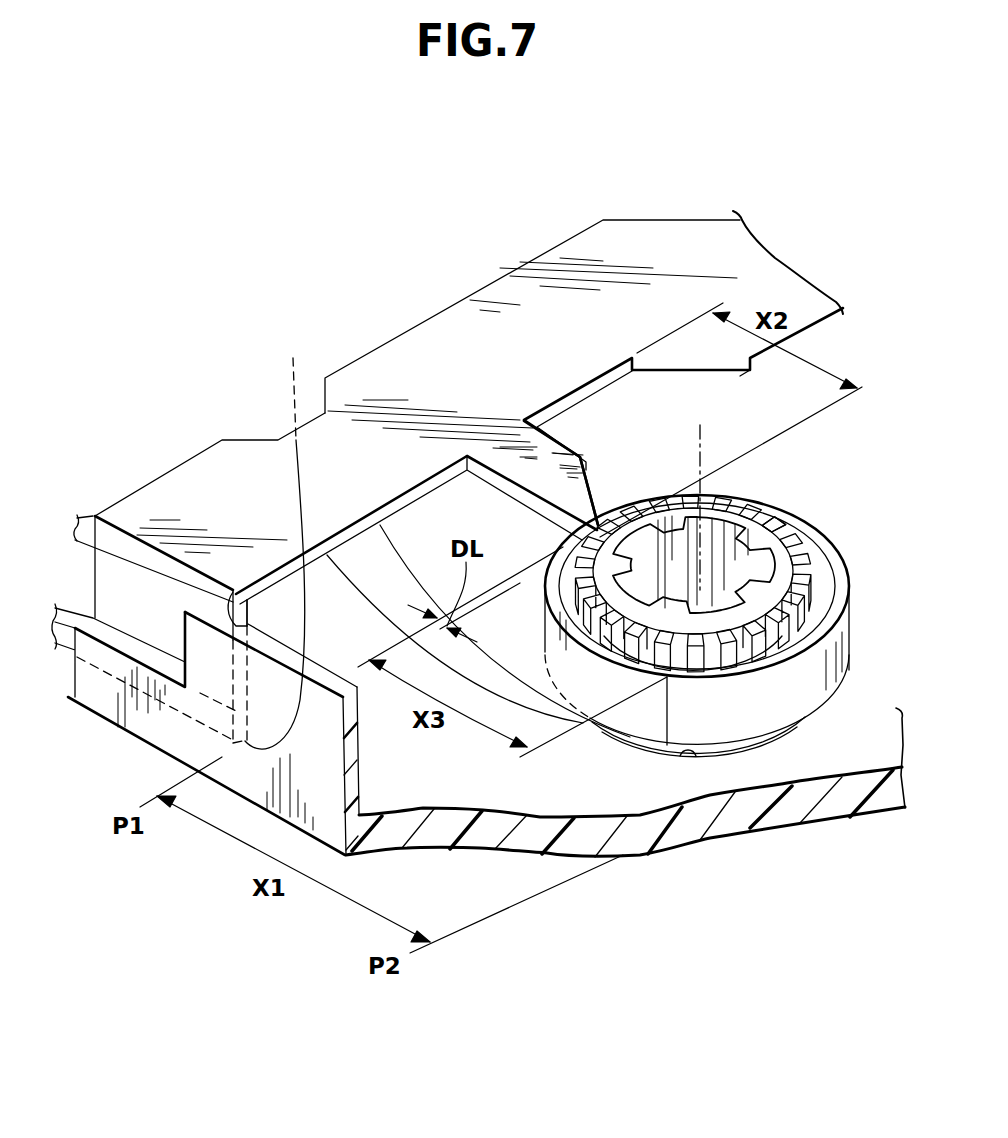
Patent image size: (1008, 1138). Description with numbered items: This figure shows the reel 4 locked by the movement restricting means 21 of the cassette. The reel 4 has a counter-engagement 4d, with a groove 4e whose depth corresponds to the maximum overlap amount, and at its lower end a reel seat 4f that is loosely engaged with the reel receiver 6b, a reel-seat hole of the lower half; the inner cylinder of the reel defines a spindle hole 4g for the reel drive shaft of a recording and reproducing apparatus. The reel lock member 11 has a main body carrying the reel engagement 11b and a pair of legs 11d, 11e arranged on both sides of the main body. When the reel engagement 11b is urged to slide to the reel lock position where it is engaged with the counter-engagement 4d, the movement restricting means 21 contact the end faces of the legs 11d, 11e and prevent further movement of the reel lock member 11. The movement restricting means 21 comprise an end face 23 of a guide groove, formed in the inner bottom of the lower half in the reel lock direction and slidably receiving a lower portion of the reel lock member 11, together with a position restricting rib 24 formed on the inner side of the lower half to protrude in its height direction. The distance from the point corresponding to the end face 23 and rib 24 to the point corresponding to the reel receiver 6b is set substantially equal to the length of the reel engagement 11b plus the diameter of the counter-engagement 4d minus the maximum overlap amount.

The reel 4 is at (729, 592).
The counter-engagement 4d is at (795, 516).
The groove 4e is at (666, 678).
The reel seat 4f is at (740, 763).
The spindle hole 4g is at (673, 557).
The reel receiver 6b is at (690, 756).
The reel lock member 11 is at (388, 338).
The reel engagement 11b is at (543, 462).
The leg 11d is at (153, 494).
The leg 11e is at (115, 583).
The movement restricting means 21 is at (324, 325).
The end face 23 is at (276, 539).
The position restricting rib 24 is at (258, 598).